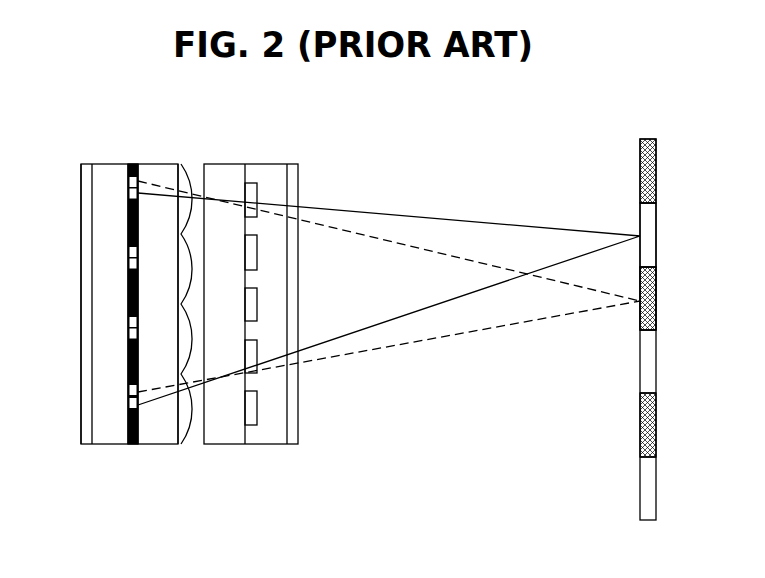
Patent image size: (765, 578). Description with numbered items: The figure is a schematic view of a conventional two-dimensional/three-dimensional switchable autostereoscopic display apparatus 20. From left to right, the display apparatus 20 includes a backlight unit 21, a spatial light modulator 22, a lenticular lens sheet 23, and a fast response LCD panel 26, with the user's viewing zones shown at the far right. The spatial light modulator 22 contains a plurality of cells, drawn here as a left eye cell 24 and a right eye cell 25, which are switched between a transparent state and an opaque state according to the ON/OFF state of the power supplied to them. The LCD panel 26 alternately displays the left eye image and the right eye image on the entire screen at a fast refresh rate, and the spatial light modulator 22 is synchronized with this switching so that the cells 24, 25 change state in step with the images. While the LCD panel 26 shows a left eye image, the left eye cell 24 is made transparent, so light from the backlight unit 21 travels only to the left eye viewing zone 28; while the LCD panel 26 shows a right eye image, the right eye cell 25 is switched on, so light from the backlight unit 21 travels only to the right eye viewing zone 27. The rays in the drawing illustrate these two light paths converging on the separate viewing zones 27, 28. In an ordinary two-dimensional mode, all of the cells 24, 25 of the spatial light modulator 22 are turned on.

The 2D-3D switchable autostereoscopic display apparatus 20 is at (196, 504).
The backlight unit 21 is at (87, 163).
The spatial light modulator 22 is at (110, 163).
The lenticular lens sheet 23 is at (184, 163).
The left eye cell 24 is at (130, 390).
The right eye cell 25 is at (130, 402).
The fast response LCD panel 26 is at (235, 163).
The right eye viewing zone 27 is at (640, 218).
The left eye viewing zone 28 is at (640, 312).